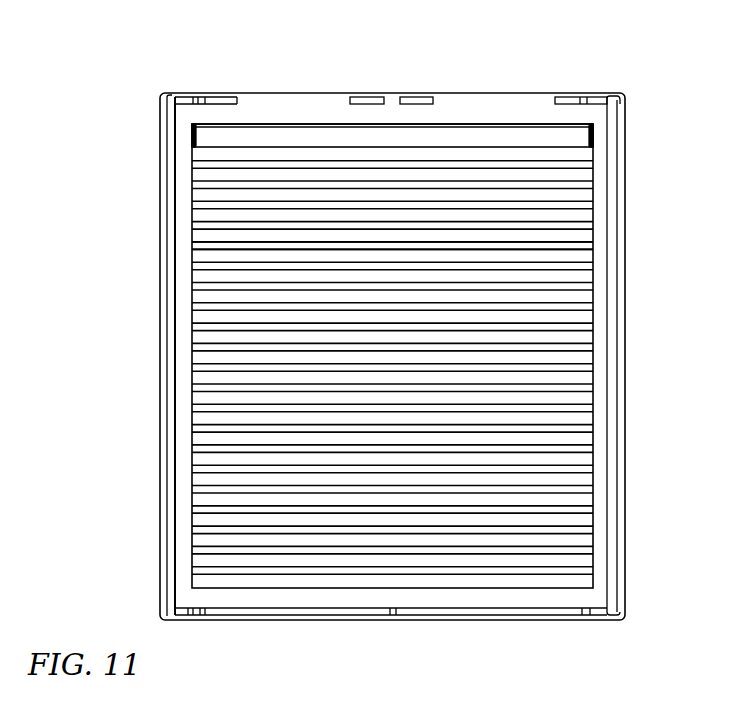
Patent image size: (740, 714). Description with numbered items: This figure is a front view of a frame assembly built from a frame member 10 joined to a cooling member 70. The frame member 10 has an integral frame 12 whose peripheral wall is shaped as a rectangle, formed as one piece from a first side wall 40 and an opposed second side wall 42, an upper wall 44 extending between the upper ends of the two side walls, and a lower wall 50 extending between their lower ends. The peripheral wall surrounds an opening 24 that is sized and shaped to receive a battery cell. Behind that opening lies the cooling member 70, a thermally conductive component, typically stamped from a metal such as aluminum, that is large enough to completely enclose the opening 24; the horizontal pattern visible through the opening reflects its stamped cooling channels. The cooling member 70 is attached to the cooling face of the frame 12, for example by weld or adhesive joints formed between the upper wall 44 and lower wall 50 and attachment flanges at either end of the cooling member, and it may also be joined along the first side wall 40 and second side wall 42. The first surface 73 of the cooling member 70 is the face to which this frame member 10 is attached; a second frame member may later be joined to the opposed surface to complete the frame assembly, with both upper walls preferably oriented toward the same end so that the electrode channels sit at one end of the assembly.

The frame member 10 is at (476, 90).
The integral frame 12 is at (320, 92).
The opening 24 is at (190, 485).
The first side wall 40 is at (160, 390).
The second side wall 42 is at (625, 460).
The upper wall 44 is at (292, 112).
The lower wall 50 is at (326, 607).
The cooling member 70 is at (191, 521).
The first surface 73 is at (575, 256).